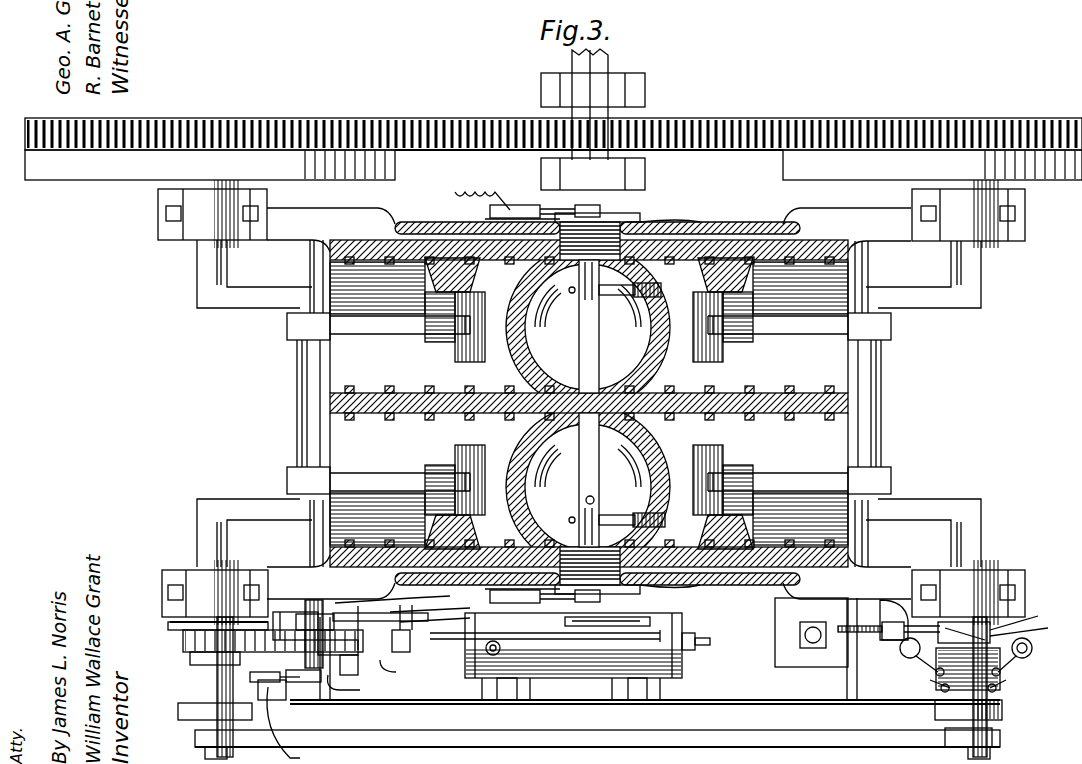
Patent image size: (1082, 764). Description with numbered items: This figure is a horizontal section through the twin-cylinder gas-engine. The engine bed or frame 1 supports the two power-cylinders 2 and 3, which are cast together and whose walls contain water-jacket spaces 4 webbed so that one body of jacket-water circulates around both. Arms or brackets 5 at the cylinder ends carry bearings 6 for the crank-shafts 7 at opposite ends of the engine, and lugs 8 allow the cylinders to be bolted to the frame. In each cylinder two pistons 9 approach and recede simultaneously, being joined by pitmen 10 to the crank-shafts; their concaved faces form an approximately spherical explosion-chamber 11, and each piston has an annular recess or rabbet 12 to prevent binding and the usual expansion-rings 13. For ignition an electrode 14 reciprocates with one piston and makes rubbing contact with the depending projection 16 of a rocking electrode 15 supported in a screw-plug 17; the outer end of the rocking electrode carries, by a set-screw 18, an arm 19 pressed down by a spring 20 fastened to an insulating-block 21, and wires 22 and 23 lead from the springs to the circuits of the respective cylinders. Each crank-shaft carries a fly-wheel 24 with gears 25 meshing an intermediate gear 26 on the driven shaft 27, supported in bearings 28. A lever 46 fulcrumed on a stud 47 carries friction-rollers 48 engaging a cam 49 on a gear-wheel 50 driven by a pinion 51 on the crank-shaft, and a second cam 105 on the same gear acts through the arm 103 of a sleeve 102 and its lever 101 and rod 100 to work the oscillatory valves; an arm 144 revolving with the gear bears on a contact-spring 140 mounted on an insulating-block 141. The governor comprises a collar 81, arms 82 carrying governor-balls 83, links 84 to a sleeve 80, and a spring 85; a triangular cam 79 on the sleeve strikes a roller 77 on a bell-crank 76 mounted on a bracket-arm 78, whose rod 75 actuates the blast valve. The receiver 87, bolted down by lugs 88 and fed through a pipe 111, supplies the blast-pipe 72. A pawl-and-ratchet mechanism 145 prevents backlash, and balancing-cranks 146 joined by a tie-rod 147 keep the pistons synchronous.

The engine bed or frame 1 is at (597, 672).
The power-cylinder 2 is at (589, 490).
The power-cylinder 3 is at (589, 326).
The water-jacket spaces 4 is at (785, 572).
The arms or brackets 5 is at (589, 403).
The bearings 6 is at (591, 402).
The crank-shafts 7 is at (870, 442).
The lugs 8 is at (811, 632).
The pistons 9 is at (665, 474).
The pitmen 10 is at (589, 404).
The explosion-chamber 11 is at (589, 403).
The annular recess or rabbet 12 is at (640, 580).
The expansion-rings 13 is at (720, 460).
The electrode 14 is at (620, 516).
The rocking electrode 15 is at (566, 522).
The depending projection 16 is at (589, 499).
The screw-plug 17 is at (678, 405).
The set-screw 18 is at (640, 594).
The arm 19 is at (575, 598).
The spring 20 is at (515, 596).
The insulating-block 21 is at (515, 422).
The wire 22 is at (392, 603).
The wire 23 is at (471, 193).
The fly-wheel 24 is at (553, 165).
The gears 25 is at (553, 124).
The intermediate gear 26 is at (589, 125).
The driven shaft 27 is at (600, 72).
The bearings 28 is at (593, 131).
The lever 46 is at (430, 610).
The stud or support 47 is at (368, 600).
The friction-roller 48 is at (314, 600).
The cam 49 is at (283, 612).
The gear-wheel 50 is at (348, 674).
The pinion 51 is at (182, 645).
The blast-pipe 72 is at (716, 634).
The rod 75 is at (880, 619).
The bell-crank 76 is at (905, 636).
The roller 77 is at (964, 619).
The stud or bracket-arm 78 is at (890, 604).
The cam 79 is at (1024, 617).
The sleeve 80 is at (1029, 628).
The collar 81 is at (1002, 705).
The arms 82 is at (1020, 666).
The governor-balls 83 is at (1042, 648).
The links 84 is at (977, 664).
The spring 85 is at (942, 688).
The receiver 87 is at (573, 645).
The lugs 88 is at (571, 700).
The rod, link or bar 100 is at (617, 624).
The lever 101 is at (545, 641).
The sleeve 102 is at (420, 630).
The arm 103 is at (398, 661).
The cam 105 is at (320, 682).
The pipe 111 is at (507, 652).
The contact-spring 140 is at (250, 677).
The insulating-block 141 is at (295, 725).
The arm 144 is at (285, 690).
The pawl-and-ratchet mechanism 145 is at (168, 625).
The balancing-cranks 146 is at (1000, 730).
The tie-rod or link 147 is at (628, 742).